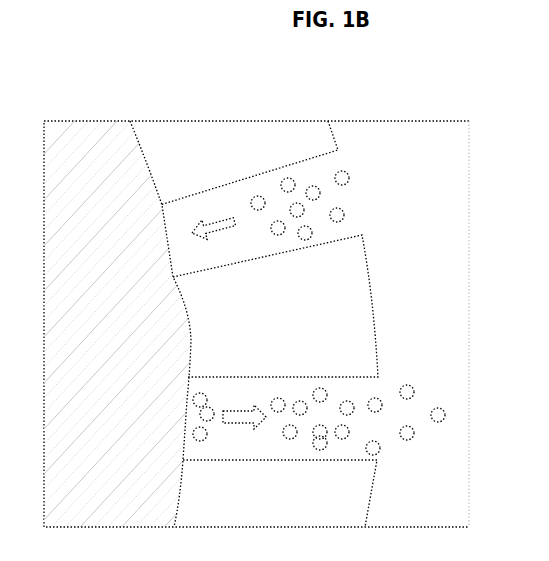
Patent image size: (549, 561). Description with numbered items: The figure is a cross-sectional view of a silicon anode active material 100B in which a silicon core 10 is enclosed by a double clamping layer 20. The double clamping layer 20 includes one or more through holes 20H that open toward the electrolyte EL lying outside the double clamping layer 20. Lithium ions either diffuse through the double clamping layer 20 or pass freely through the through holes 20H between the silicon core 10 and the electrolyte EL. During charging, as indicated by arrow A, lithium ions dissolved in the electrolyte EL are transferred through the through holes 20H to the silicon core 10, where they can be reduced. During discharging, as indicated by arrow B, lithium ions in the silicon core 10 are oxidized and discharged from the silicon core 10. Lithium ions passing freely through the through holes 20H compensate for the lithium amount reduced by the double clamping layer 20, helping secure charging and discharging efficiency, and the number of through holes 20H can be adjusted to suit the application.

The silicon anode active material 100B is at (352, 112).
The silicon core 10 is at (130, 113).
The double clamping layer 20 is at (131, 113).
The through holes 20H is at (340, 242).
The electrolyte EL is at (390, 158).
The arrow A is at (223, 229).
The arrow B is at (240, 425).